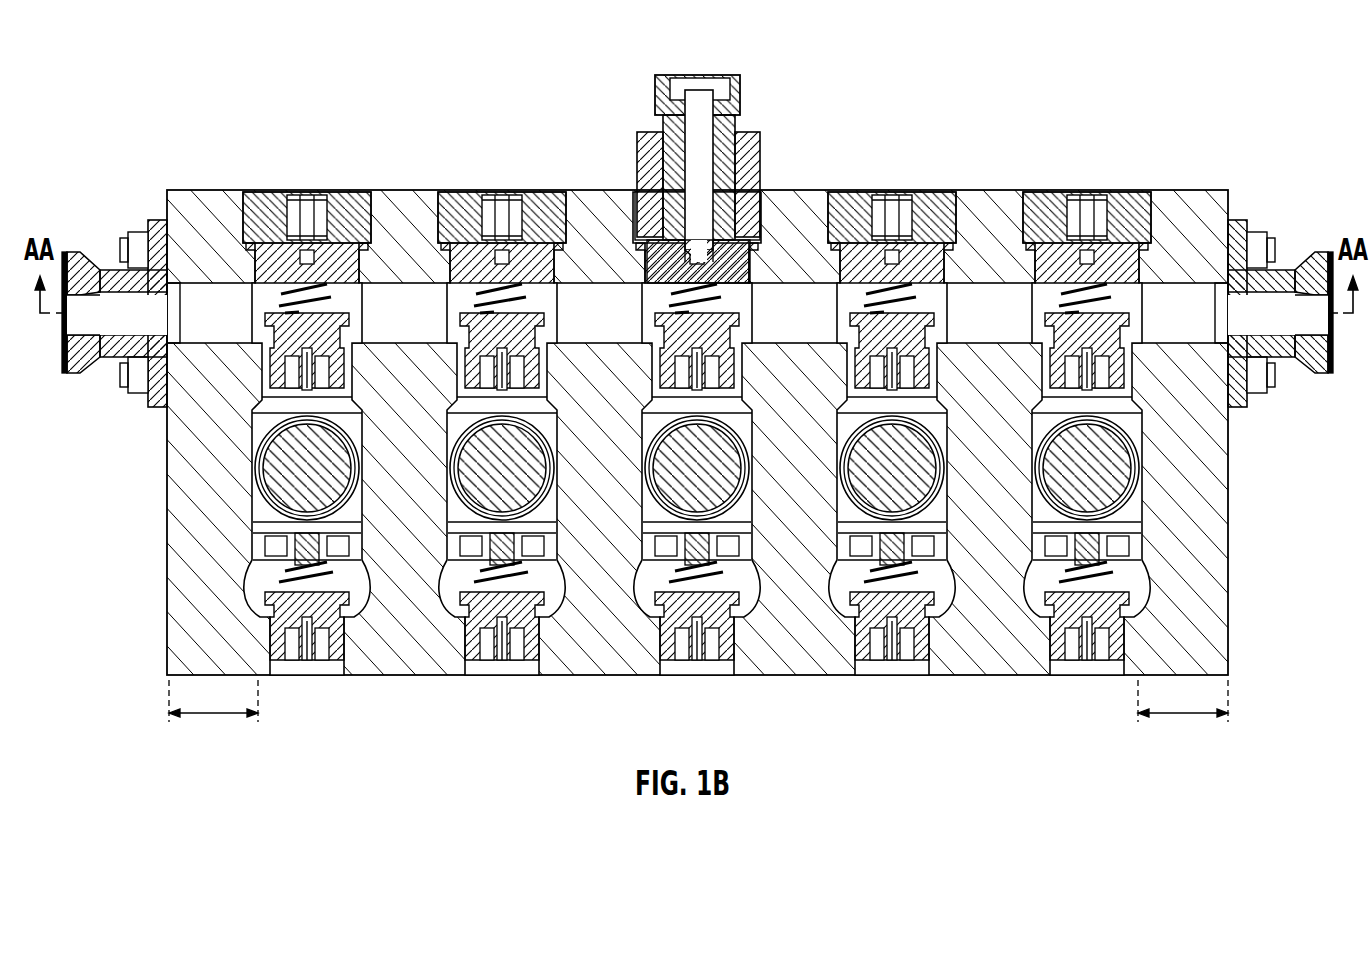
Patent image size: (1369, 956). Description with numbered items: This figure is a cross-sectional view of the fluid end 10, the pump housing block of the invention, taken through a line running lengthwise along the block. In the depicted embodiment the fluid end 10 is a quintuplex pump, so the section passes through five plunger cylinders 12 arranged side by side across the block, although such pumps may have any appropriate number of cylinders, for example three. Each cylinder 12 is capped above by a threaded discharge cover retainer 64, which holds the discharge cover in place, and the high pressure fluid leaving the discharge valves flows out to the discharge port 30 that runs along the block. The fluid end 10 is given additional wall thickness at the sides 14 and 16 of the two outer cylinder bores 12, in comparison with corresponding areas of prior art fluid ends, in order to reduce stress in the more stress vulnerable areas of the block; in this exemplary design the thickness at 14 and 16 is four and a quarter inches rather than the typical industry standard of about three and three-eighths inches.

The fluid end 10 is at (1205, 520).
The plunger cylinder 12 is at (438, 665).
The side wall thickness 14 is at (250, 712).
The side wall thickness 16 is at (1220, 712).
The discharge port 30 is at (772, 306).
The threaded discharge cover retainer 64 is at (268, 195).